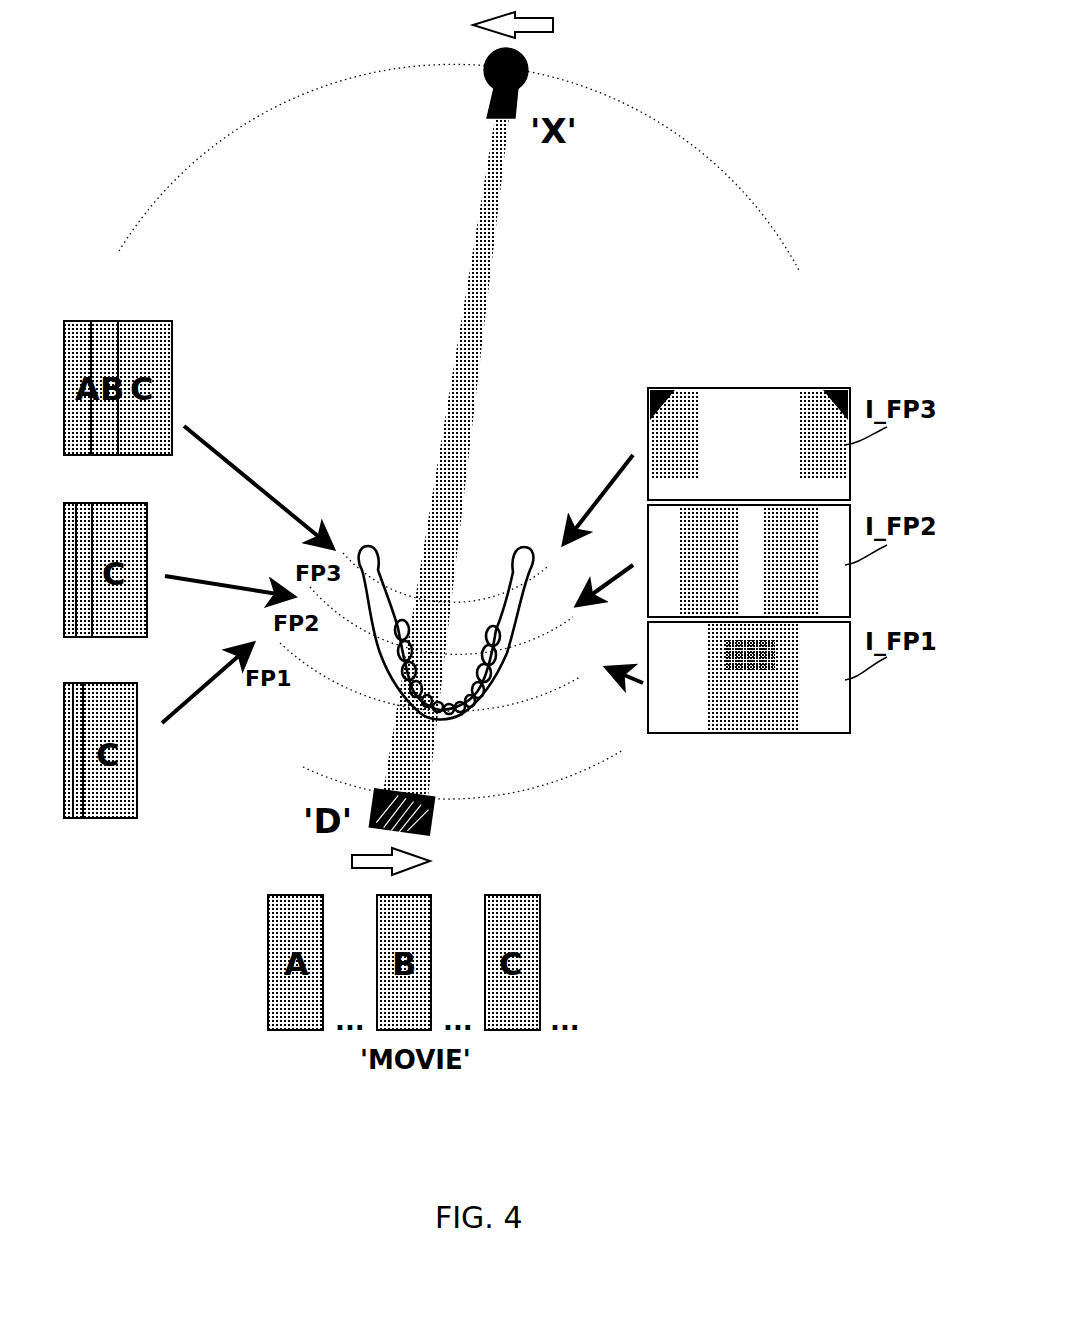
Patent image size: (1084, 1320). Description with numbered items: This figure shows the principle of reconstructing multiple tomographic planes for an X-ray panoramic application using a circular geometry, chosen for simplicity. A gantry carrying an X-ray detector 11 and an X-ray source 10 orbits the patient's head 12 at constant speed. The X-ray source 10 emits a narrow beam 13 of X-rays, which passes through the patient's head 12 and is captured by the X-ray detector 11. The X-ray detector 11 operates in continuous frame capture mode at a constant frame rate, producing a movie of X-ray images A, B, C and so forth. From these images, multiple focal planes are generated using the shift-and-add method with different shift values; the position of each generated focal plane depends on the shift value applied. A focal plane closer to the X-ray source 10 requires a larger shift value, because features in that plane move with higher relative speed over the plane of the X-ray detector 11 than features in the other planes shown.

The X-ray source 10 is at (473, 98).
The X-ray detector 11 is at (453, 817).
The patient's head 12 is at (360, 517).
The narrow beam 13 is at (480, 275).